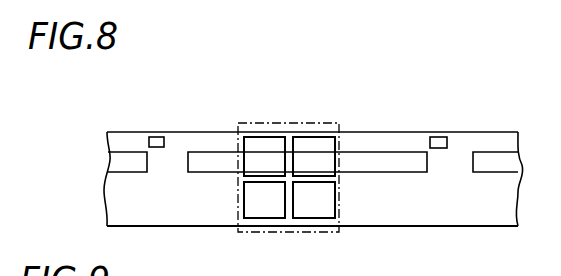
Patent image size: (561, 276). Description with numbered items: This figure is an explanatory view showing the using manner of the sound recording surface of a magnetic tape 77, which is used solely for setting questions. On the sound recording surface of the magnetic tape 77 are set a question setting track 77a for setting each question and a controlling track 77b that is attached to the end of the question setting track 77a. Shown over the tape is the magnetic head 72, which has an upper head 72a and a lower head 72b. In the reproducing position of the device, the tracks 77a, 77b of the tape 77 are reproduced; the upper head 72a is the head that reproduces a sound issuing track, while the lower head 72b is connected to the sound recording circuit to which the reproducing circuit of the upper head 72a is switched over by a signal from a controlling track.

The magnetic head 72 is at (334, 124).
The upper head 72a is at (287, 143).
The lower head 72b is at (291, 214).
The magnetic tape 77 is at (216, 205).
The question setting track 77a is at (159, 137).
The controlling track 77b is at (441, 137).